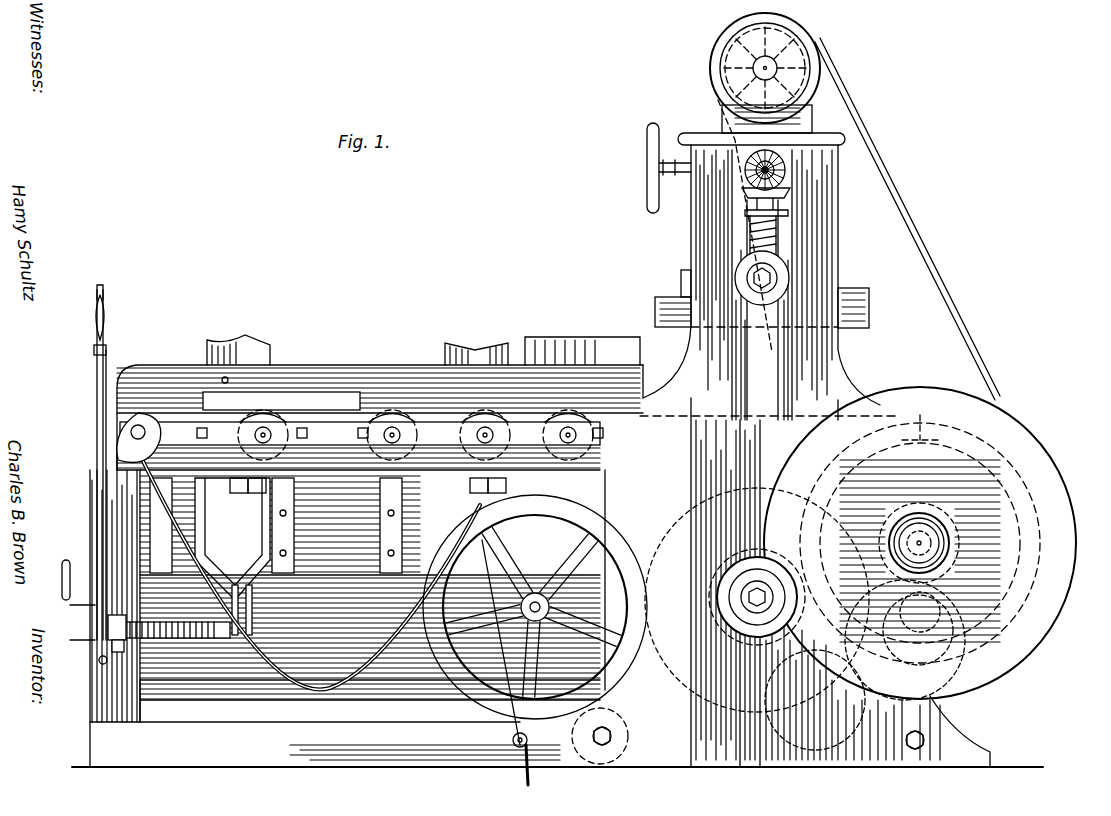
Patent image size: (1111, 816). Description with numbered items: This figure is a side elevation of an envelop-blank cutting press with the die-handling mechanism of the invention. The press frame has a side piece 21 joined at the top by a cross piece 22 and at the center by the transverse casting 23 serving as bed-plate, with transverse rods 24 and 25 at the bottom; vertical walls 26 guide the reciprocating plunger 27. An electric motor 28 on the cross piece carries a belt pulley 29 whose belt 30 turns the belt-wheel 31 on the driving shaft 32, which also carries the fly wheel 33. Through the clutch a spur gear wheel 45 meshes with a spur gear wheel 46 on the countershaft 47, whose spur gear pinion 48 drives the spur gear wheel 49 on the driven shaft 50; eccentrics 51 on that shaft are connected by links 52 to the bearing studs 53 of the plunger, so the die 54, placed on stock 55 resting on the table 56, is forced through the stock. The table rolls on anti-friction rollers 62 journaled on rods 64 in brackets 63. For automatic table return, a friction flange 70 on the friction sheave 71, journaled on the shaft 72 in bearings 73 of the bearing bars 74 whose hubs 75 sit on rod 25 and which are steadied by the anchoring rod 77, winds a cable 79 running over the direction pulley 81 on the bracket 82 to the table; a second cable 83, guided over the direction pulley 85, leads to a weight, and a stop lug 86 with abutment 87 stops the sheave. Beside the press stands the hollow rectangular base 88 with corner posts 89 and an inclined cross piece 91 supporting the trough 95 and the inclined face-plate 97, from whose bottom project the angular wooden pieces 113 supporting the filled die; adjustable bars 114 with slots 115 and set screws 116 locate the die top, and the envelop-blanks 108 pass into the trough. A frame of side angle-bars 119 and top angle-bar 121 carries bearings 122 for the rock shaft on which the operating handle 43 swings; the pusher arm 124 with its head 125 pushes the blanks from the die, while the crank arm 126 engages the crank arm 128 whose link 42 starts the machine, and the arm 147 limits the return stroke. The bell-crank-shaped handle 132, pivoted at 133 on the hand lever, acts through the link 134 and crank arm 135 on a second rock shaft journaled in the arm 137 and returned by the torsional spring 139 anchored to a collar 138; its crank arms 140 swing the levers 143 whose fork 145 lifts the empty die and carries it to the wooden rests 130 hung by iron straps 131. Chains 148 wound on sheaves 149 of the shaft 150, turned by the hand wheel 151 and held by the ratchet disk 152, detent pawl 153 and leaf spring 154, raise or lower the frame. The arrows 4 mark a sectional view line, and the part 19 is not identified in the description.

The section line 4 is at (244, 781).
The lever 19 is at (75, 600).
The side piece 21 is at (840, 360).
The cross piece 22 is at (822, 126).
The transverse casting 23 is at (712, 420).
The transverse rod 24 is at (612, 736).
The transverse rod 25 is at (928, 735).
The vertical walls 26 is at (785, 218).
The plunger 27 is at (868, 310).
The electric motor 28 is at (805, 38).
The belt pulley 29 is at (815, 62).
The belt 30 is at (882, 196).
The belt-wheel 31 is at (1042, 456).
The driving shaft 32 is at (955, 540).
The fly wheel 33 is at (1060, 592).
The link 42 is at (585, 540).
The operating handle 43 is at (108, 330).
The spur gear wheel 45 is at (960, 560).
The spur gear wheel 46 is at (975, 640).
The countershaft 47 is at (990, 660).
The spur gear pinion 48 is at (990, 686).
The spur gear wheel 49 is at (815, 701).
The driven shaft 50 is at (762, 640).
The eccentrics 51 is at (723, 660).
The links 52 is at (750, 385).
The bearing studs 53 is at (775, 276).
The die 54 is at (620, 345).
The stock 55 is at (368, 366).
The table 56 is at (400, 375).
The anti-friction rollers 62 is at (265, 418).
The brackets 63 is at (531, 437).
The rods 64 is at (268, 430).
The annular friction flange 70 is at (450, 690).
The friction sheave 71 is at (480, 690).
The shaft 72 is at (443, 650).
The bearings 73 is at (580, 590).
The bearing bars 74 is at (636, 692).
The hubs 75 is at (639, 712).
The anchoring rod 77 is at (559, 500).
The rope or cable 79 is at (308, 680).
The direction pulley 81 is at (128, 432).
The bracket 82 is at (178, 395).
The second rope or cable 83 is at (590, 720).
The direction pulley 85 is at (520, 750).
The stop lug 86 is at (560, 690).
The abutment 87 is at (528, 690).
The hollow rectangular base 88 is at (196, 752).
The corner posts 89 is at (112, 715).
The inclined cross piece 91 is at (228, 690).
The trough 95 is at (278, 548).
The face-plate 97 is at (145, 366).
The envelop-blank 108 is at (251, 517).
The angular wooden pieces 113 is at (232, 530).
The adjustable bars 114 is at (258, 355).
The slots 115 is at (218, 360).
The set screws 116 is at (232, 380).
The side angle-bars 119 is at (135, 710).
The top angle-bar 121 is at (385, 650).
The bearings 122 is at (105, 628).
The pusher arm 124 is at (496, 510).
The head 125 is at (305, 448).
The crank arm 126 is at (545, 700).
The crank arm 128 is at (590, 690).
The wooden rests 130 is at (622, 456).
The iron straps 131 is at (400, 520).
The bell-crank-shaped handle 132 is at (91, 308).
The pivot 133 is at (92, 352).
The link 134 is at (108, 383).
The crank arm 135 is at (165, 620).
The arm 137 is at (100, 660).
The collar 138 is at (205, 650).
The torsional spring 139 is at (170, 650).
The crank arms 140 is at (262, 625).
The levers 143 is at (232, 488).
The fork 145 is at (245, 430).
The arm 147 is at (470, 700).
The chain 148 is at (145, 525).
The sheave 149 is at (152, 560).
The shaft 150 is at (355, 580).
The hand wheel 151 is at (80, 565).
The ratchet disk 152 is at (82, 580).
The detent pawl 153 is at (85, 545).
The leaf spring 154 is at (85, 535).